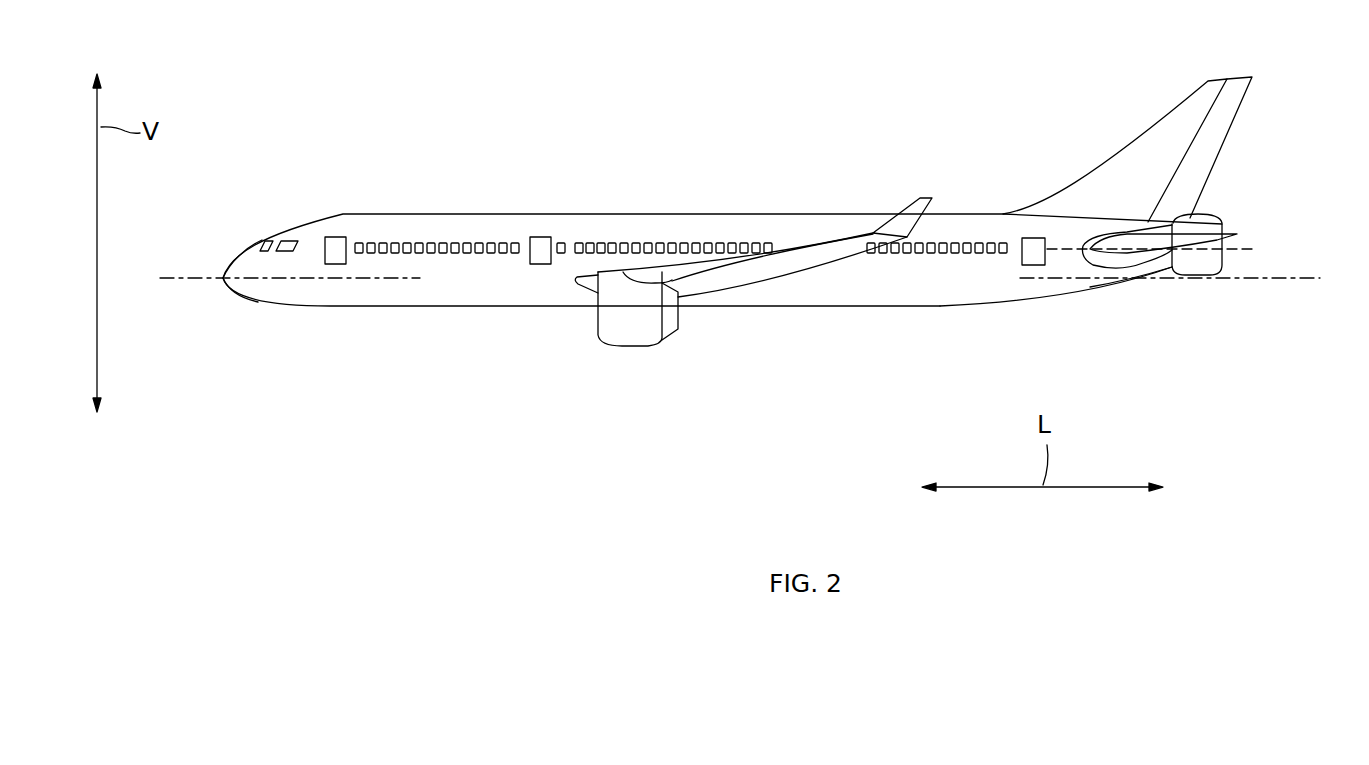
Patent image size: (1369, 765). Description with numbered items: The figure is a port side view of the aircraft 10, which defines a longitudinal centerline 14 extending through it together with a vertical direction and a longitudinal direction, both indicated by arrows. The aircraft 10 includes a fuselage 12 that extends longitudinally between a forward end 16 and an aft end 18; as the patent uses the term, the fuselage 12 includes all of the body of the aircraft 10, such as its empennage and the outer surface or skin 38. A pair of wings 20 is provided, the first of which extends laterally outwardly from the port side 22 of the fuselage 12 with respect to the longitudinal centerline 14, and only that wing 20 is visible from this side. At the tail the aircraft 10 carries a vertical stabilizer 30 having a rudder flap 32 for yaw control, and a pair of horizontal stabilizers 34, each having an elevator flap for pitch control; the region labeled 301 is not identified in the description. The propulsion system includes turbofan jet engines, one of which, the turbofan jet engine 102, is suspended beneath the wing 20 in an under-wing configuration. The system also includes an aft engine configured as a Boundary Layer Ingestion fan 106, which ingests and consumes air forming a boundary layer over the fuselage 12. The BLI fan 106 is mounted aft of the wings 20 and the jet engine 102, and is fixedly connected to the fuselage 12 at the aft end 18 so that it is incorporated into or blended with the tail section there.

The aircraft 10 is at (283, 83).
The fuselage 12 is at (288, 291).
The longitudinal centerline 14 is at (178, 276).
The forward end 16 is at (222, 283).
The aft end 18 is at (1112, 284).
The wings 20 is at (707, 287).
The port side 22 is at (921, 298).
The vertical stabilizer 30 is at (1170, 108).
The rudder flap 32 is at (1228, 110).
The horizontal stabilizer 34 is at (1158, 262).
The outer surface or skin 38 is at (647, 195).
The turbofan jet engine 102 is at (618, 347).
The Boundary Layer Ingestion (BLI) fan 106 is at (1213, 207).
The tail cone 301 is at (1068, 240).